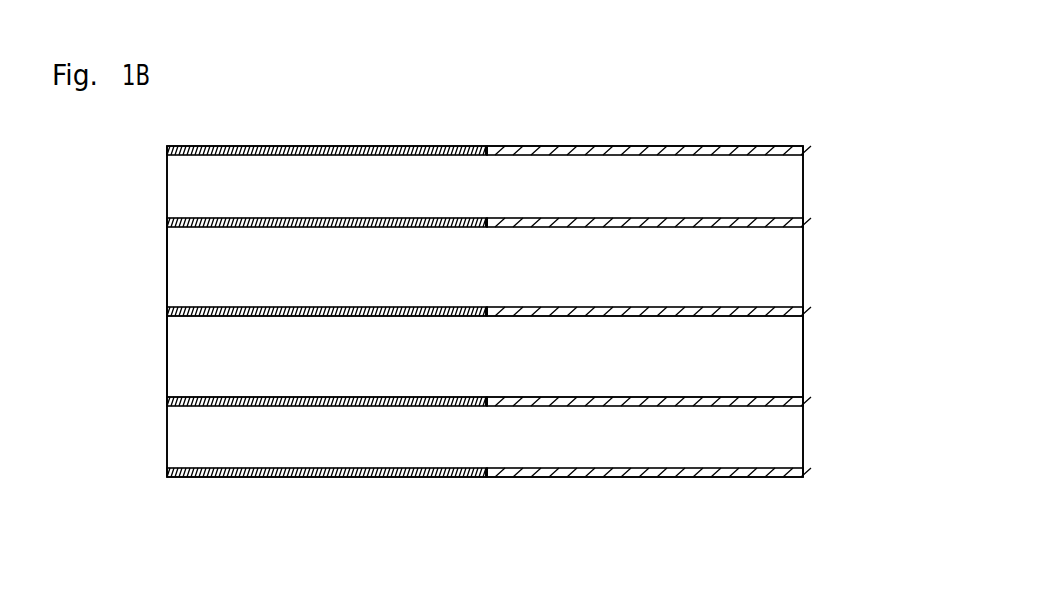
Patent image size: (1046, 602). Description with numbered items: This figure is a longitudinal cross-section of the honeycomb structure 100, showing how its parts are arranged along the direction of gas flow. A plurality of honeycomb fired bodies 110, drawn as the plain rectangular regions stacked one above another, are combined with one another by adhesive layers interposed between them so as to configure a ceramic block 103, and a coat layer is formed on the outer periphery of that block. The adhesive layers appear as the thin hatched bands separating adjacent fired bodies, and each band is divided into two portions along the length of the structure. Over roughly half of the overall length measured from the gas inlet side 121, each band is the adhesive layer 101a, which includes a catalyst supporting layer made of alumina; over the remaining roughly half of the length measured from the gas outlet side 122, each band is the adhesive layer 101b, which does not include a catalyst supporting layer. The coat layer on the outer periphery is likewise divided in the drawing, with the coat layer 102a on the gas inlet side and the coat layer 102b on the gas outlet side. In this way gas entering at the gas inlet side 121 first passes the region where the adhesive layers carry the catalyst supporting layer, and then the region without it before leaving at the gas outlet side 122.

The honeycomb structure 100 is at (606, 126).
The adhesive layer including a catalyst supporting layer 101a is at (333, 221).
The adhesive layer not including a catalyst supporting layer 101b is at (634, 225).
The coat layer on the gas inlet side 102a is at (322, 470).
The coat layer on the gas outlet side 102b is at (632, 471).
The ceramic block 103 is at (163, 236).
The honeycomb fired body 110 is at (785, 365).
The gas inlet side 121 is at (166, 338).
The gas outlet side 122 is at (804, 242).